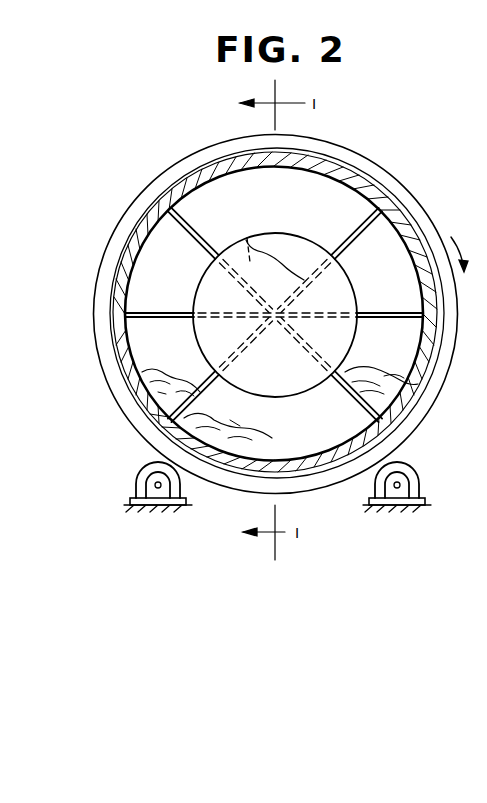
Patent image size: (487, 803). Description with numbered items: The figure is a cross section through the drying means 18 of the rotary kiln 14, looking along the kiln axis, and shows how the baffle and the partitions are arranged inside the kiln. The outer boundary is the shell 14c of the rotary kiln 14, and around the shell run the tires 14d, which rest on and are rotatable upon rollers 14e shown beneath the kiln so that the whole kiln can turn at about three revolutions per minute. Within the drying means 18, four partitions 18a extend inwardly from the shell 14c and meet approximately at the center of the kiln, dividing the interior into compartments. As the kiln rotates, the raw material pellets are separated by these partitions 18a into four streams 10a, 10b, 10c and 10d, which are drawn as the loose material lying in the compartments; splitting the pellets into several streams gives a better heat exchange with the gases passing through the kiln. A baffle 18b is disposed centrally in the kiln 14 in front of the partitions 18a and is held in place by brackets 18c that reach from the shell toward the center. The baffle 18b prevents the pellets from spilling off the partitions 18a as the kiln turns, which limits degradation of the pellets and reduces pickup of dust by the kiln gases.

The rotary kiln 14 is at (421, 207).
The shell 14c is at (362, 168).
The tires 14d is at (116, 402).
The rollers 14e is at (138, 468).
The drying means 18 is at (191, 143).
The partitions 18a is at (200, 232).
The baffle 18b is at (344, 282).
The brackets 18c is at (170, 312).
The stream 10a is at (400, 392).
The stream 10b is at (228, 426).
The stream 10c is at (176, 386).
The stream 10d is at (248, 242).